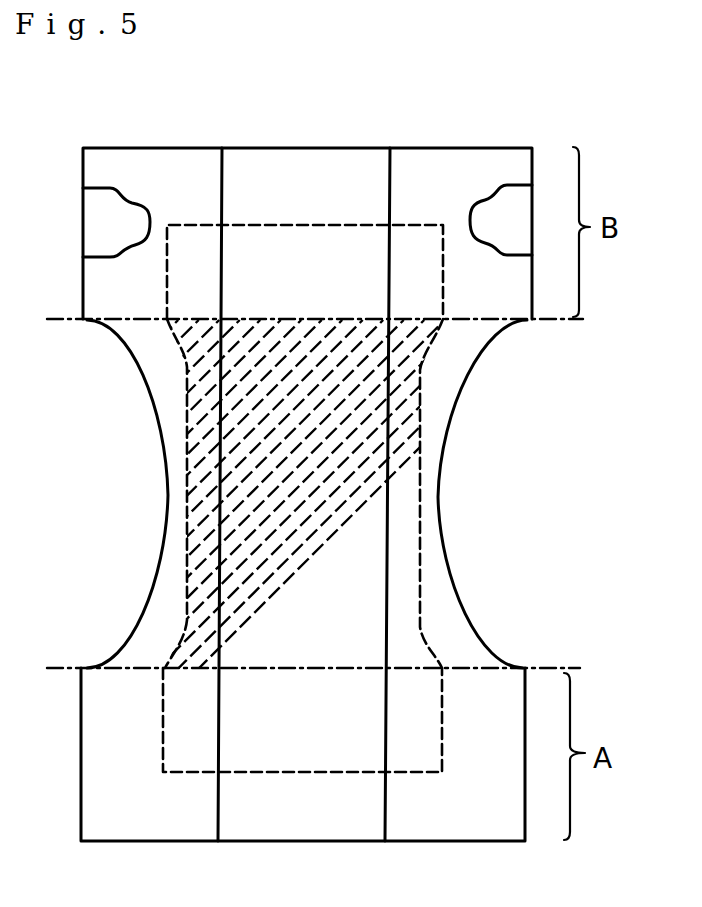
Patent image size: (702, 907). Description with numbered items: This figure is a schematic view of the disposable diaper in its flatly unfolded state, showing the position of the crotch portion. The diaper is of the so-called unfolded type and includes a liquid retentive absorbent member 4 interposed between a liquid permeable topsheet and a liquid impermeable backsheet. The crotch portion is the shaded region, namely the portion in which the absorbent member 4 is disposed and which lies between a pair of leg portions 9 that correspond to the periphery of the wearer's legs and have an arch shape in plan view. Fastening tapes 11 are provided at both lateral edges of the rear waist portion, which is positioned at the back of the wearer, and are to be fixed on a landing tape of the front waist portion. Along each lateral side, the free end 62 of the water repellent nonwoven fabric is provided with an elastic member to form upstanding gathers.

The absorbent member 4 is at (312, 227).
The leg portions 9 is at (167, 488).
The fastening tapes 11 is at (128, 213).
The free end 62 is at (385, 742).